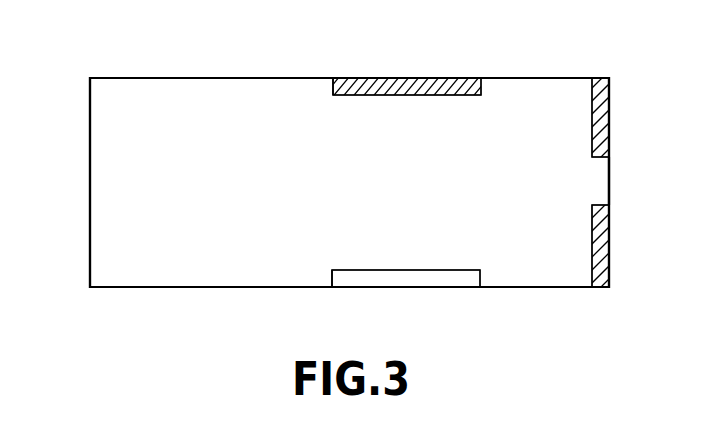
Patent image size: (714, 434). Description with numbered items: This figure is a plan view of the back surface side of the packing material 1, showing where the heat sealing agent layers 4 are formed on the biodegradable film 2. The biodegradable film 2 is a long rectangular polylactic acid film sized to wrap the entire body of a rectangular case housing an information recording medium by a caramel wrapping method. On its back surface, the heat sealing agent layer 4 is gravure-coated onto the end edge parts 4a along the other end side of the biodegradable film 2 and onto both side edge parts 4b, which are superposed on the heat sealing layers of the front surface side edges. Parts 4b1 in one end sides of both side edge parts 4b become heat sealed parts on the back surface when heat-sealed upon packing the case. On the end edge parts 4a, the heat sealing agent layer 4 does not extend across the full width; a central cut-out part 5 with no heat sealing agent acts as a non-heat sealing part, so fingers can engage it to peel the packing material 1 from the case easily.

The packing material 1 is at (546, 66).
The biodegradable film 2 is at (136, 92).
The heat sealing agent layer 4 is at (455, 285).
The end edge part 4a is at (600, 99).
The side edge part 4b is at (433, 85).
The part 4b1 is at (345, 85).
The cut-out part 5 is at (592, 181).